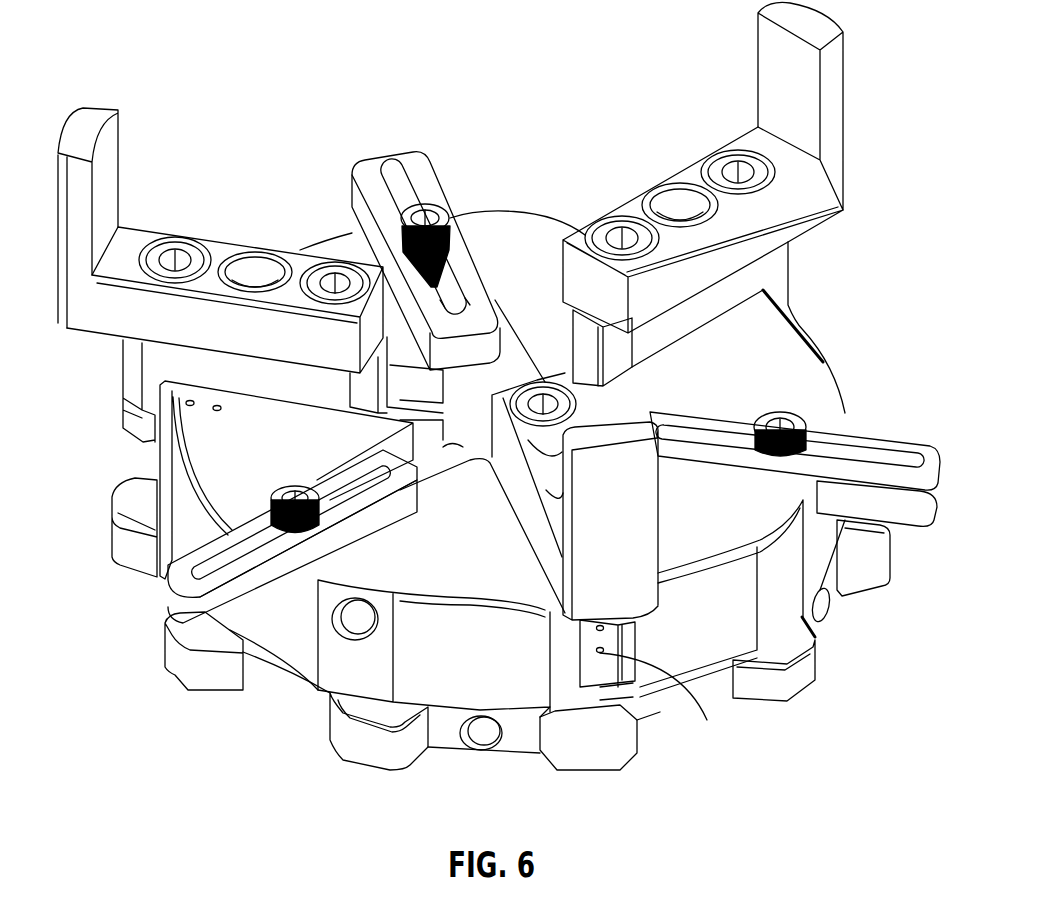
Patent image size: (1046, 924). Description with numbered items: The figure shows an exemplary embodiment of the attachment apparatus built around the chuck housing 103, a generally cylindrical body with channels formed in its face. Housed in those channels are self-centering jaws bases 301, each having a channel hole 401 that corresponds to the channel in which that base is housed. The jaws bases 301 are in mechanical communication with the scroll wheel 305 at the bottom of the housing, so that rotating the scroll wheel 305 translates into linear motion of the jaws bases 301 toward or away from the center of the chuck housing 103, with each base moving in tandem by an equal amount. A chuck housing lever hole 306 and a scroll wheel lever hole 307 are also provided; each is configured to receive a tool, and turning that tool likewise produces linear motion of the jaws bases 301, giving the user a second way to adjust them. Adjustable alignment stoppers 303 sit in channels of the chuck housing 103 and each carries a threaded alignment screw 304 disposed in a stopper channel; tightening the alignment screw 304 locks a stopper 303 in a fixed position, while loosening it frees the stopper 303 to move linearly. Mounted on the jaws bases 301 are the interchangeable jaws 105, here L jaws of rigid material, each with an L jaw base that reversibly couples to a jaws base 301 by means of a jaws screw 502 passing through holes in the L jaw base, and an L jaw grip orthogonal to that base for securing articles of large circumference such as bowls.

The chuck housing 103 is at (287, 462).
The interchangeable jaws 105 is at (237, 336).
The self-centering jaws base 301 is at (788, 273).
The adjustable alignment stopper 303 is at (880, 442).
The alignment screw 304 is at (780, 412).
The scroll wheel 305 is at (272, 713).
The chuck housing lever hole 306 is at (357, 600).
The scroll wheel lever hole 307 is at (482, 752).
The channel hole 401 is at (603, 652).
The jaws screw 502 is at (740, 155).